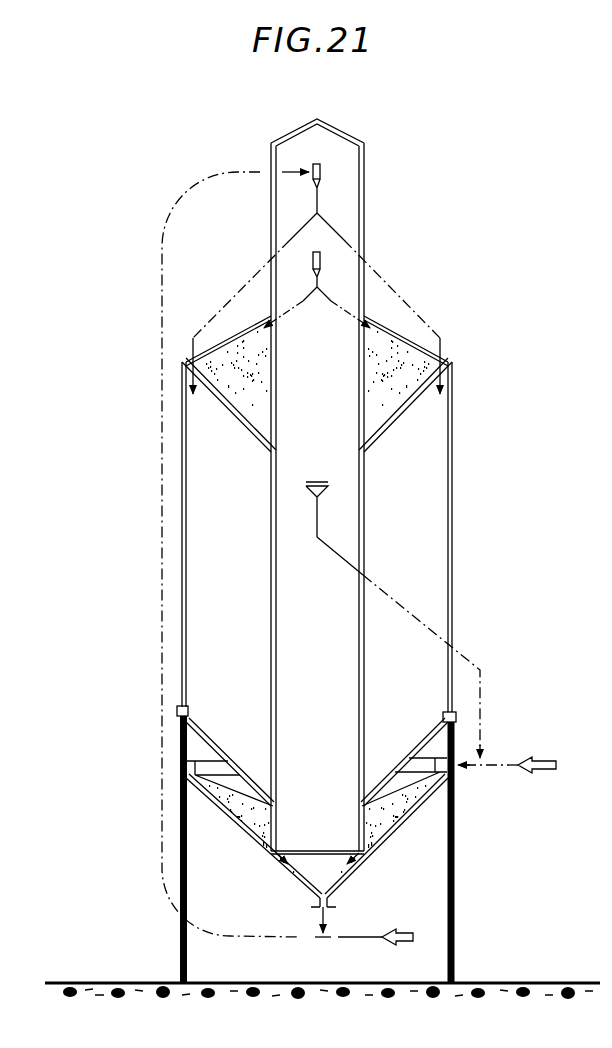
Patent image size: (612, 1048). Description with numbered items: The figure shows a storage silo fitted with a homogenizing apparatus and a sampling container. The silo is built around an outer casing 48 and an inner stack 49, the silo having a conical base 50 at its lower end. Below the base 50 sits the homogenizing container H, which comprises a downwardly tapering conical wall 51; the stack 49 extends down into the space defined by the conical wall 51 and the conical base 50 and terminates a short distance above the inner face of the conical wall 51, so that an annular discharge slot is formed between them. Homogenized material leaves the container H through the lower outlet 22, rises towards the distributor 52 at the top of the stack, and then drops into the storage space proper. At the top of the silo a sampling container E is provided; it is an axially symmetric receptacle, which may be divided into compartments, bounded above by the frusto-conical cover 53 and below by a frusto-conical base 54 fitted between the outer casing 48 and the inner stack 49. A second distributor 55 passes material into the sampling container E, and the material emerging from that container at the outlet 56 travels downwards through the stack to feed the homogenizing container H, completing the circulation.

The lower outlet 22 is at (318, 900).
The outer casing 48 is at (452, 540).
The inner stack 49 is at (364, 520).
The conical base 50 is at (406, 756).
The conical wall 51 is at (380, 848).
The distributor 52 is at (322, 172).
The frusto-conical cover 53 is at (405, 340).
The frusto-conical base 54 is at (395, 421).
The distributor 55 is at (322, 259).
The sampling container outlet 56 is at (320, 490).
The sampling container E is at (414, 407).
The homogenizing container H is at (421, 808).